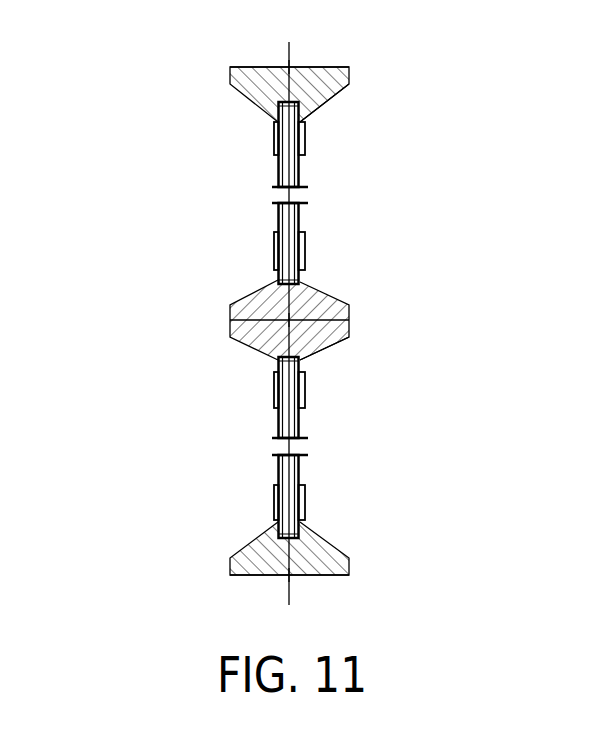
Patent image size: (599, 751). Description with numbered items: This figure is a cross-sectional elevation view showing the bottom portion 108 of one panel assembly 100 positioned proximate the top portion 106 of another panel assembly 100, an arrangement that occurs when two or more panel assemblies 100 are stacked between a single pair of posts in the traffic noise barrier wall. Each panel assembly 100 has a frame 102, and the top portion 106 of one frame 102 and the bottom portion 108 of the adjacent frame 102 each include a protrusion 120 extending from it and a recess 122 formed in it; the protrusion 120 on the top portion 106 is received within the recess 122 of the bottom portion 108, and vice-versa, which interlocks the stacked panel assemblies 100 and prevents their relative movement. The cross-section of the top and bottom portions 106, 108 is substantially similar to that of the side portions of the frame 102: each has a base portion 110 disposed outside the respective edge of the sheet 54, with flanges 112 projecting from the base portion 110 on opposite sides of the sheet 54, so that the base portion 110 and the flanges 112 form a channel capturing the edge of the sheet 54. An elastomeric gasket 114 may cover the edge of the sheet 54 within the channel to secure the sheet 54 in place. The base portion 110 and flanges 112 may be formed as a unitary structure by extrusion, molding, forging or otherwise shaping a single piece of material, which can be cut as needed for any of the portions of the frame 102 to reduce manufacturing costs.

The panel assembly 100 is at (369, 322).
The frame 102 is at (350, 78).
The top portion 106 is at (338, 92).
The bottom portion 108 is at (336, 298).
The base portion 110 is at (300, 113).
The flanges 112 is at (275, 138).
The elastomeric gasket 114 is at (273, 185).
The sheet 54 is at (306, 174).
The protrusion 120 is at (290, 66).
The recess 122 is at (294, 67).